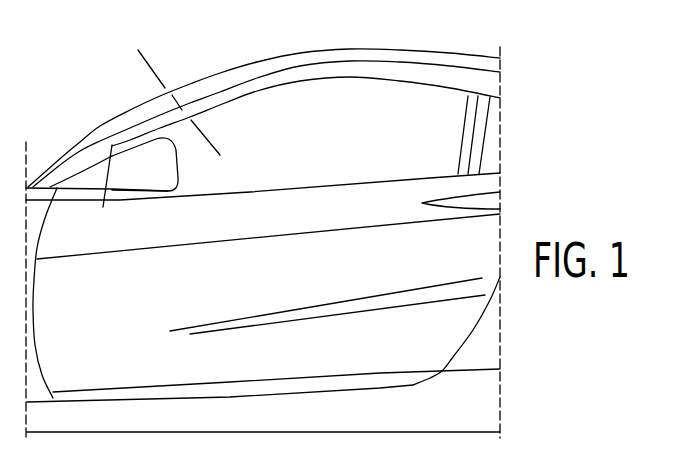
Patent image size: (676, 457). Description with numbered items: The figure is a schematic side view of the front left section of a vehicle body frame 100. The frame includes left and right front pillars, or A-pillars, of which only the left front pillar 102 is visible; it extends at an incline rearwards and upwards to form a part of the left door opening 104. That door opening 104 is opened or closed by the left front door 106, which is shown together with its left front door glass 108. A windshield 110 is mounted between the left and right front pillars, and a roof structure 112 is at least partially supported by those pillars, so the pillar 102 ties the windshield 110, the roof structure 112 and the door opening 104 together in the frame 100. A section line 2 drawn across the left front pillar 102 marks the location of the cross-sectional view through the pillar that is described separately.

The vehicle body frame 100 is at (476, 32).
The left front pillar 102 is at (110, 138).
The left door opening 104 is at (320, 100).
The left front door 106 is at (488, 243).
The left front door glass 108 is at (292, 172).
The windshield 110 is at (47, 153).
The roof structure 112 is at (445, 60).
The line 2- 2 is at (138, 51).